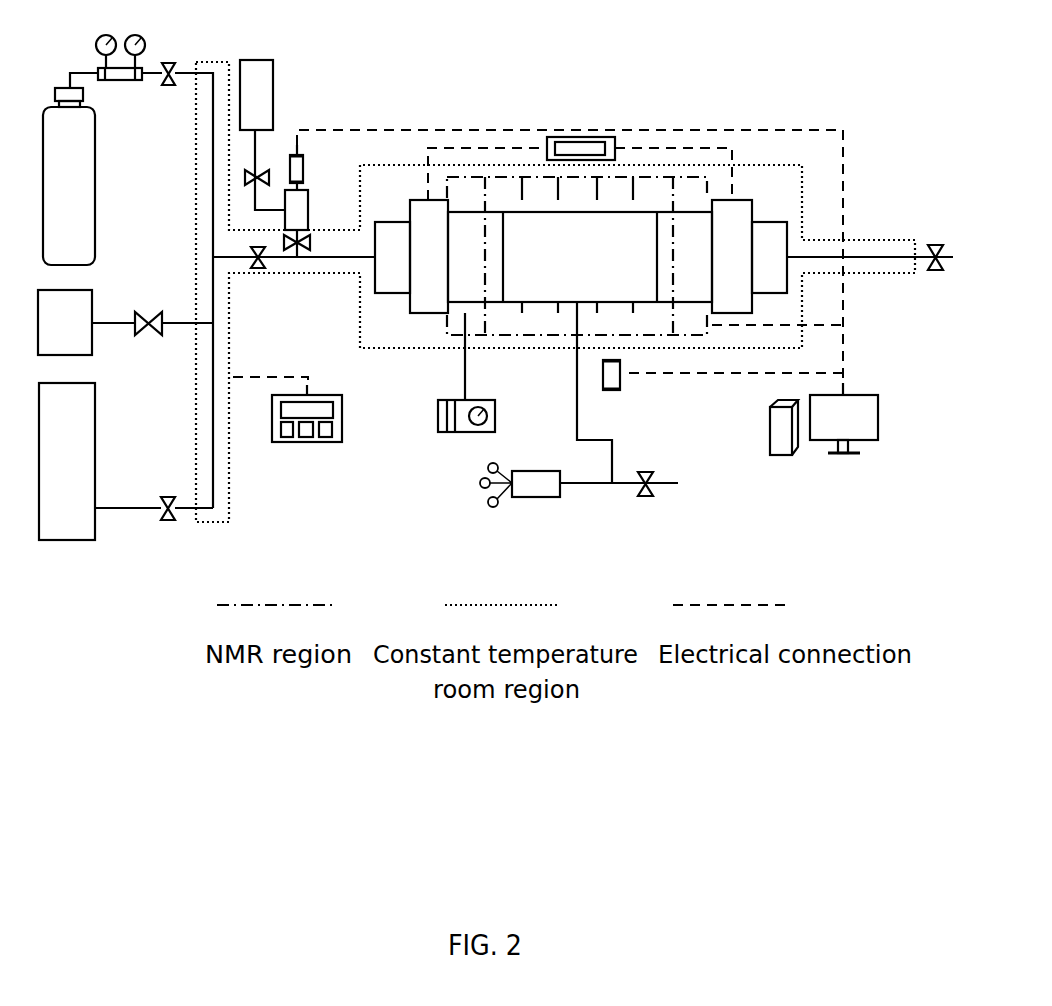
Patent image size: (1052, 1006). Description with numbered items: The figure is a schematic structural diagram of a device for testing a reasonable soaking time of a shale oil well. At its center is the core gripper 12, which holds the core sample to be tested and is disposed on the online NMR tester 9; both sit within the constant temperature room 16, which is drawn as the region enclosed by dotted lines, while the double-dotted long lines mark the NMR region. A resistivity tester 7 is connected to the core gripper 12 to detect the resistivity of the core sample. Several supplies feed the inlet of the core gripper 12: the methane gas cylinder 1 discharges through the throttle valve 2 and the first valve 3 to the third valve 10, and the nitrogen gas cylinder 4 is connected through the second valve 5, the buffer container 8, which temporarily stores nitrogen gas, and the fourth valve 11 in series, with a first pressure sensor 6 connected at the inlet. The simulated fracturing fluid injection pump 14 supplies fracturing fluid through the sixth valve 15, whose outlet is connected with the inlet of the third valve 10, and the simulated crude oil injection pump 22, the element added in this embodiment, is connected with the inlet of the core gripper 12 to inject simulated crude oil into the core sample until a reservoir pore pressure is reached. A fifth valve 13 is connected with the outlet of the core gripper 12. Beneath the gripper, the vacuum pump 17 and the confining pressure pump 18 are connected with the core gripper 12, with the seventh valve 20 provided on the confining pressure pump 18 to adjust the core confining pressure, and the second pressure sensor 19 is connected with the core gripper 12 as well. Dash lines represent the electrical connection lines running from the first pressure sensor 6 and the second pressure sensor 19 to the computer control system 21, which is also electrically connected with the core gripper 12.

The methane gas cylinder 1 is at (69, 176).
The throttle valve 2 is at (120, 72).
The first valve 3 is at (168, 86).
The nitrogen gas cylinder 4 is at (262, 135).
The second valve 5 is at (251, 187).
The first pressure sensor 6 is at (306, 167).
The resistivity tester 7 is at (581, 137).
The buffer container 8 is at (308, 223).
The online NMR tester 9 is at (581, 245).
The third valve 10 is at (258, 271).
The fourth valve 11 is at (308, 243).
The core gripper 12 is at (566, 256).
The fifth valve 13 is at (935, 270).
The simulated fracturing fluid injection pump 14 is at (67, 461).
The sixth valve 15 is at (163, 496).
The constant temperature room 16 is at (307, 424).
The vacuum pump 17 is at (466, 384).
The confining pressure pump 18 is at (579, 478).
The second pressure sensor 19 is at (611, 392).
The seventh valve 20 is at (645, 474).
The computer control system 21 is at (824, 430).
The simulated crude oil injection pump 22 is at (65, 322).